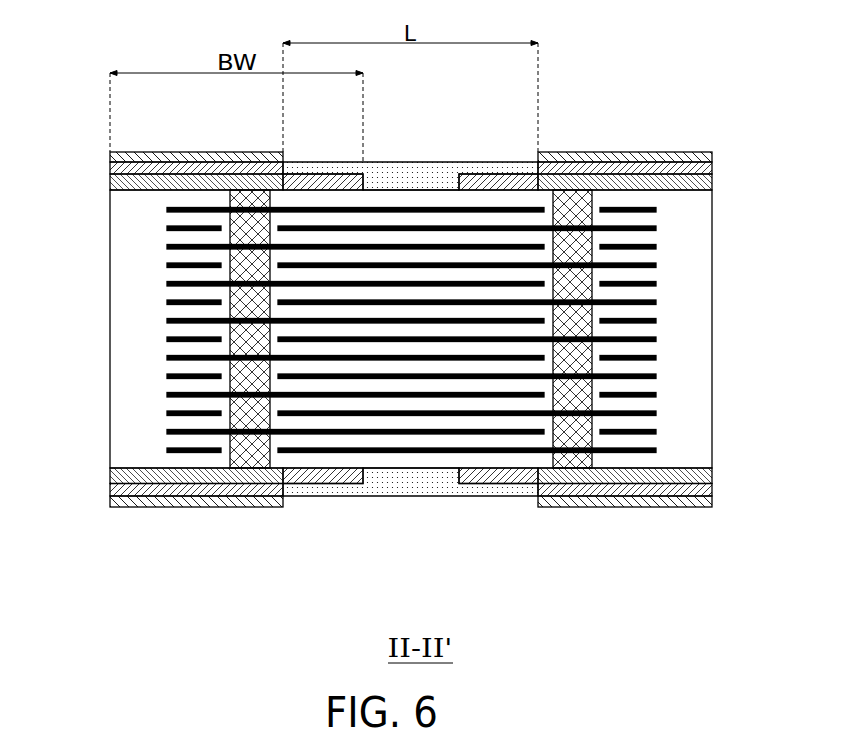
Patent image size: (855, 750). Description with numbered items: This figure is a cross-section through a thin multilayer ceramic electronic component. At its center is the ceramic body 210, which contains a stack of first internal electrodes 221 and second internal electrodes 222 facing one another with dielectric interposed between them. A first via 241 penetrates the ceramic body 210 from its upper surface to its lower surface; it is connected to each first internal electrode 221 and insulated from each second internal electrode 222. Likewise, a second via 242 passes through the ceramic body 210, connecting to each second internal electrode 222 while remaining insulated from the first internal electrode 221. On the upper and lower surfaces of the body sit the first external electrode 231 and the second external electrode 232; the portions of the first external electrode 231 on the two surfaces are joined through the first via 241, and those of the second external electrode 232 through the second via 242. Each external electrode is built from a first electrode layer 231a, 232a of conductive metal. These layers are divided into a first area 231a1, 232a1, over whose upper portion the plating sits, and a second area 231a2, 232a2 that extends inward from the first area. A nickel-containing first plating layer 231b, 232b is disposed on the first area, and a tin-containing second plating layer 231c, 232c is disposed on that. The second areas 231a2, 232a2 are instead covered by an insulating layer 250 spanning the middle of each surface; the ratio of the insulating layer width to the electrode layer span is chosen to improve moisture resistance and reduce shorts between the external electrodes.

The ceramic body 210 is at (432, 189).
The first internal electrode 221 is at (173, 211).
The second internal electrode 222 is at (178, 231).
The first external electrode 231 is at (232, 398).
The first electrode layer 231a is at (242, 390).
The first area 231a1 is at (248, 484).
The second area 231a2 is at (329, 371).
The first plating layer 231b is at (182, 507).
The second plating layer 231c is at (302, 603).
The second external electrode 232 is at (585, 398).
The first electrode layer 232a is at (578, 391).
The first area 232a1 is at (568, 477).
The second area 232a2 is at (495, 473).
The first plating layer 232b is at (635, 484).
The second plating layer 232c is at (633, 380).
The first via 241 is at (230, 384).
The second via 242 is at (593, 378).
The insulating layer 250 is at (397, 172).